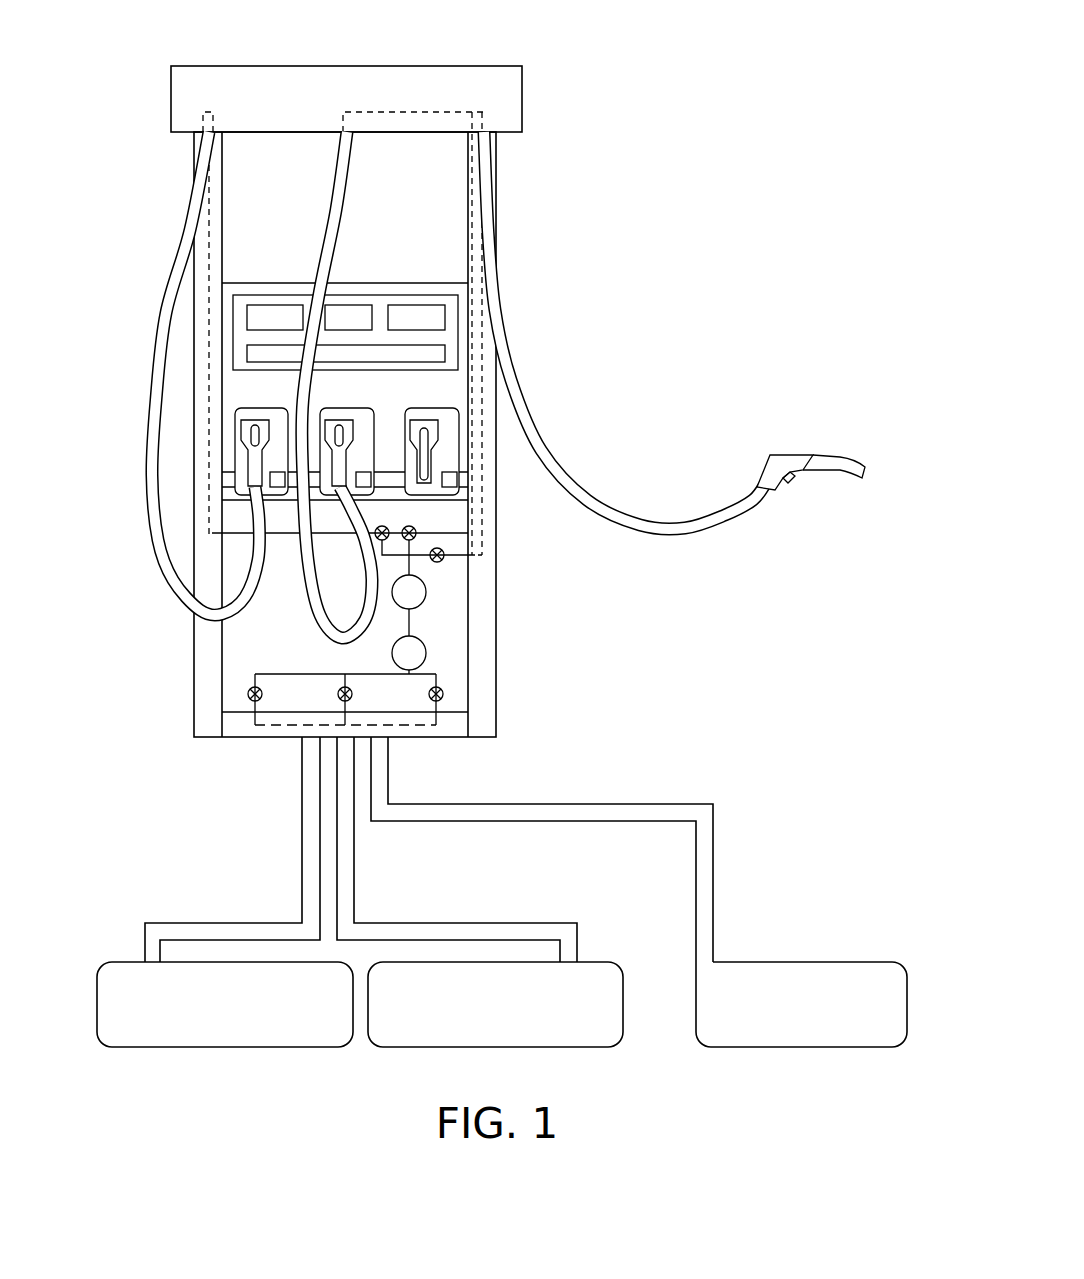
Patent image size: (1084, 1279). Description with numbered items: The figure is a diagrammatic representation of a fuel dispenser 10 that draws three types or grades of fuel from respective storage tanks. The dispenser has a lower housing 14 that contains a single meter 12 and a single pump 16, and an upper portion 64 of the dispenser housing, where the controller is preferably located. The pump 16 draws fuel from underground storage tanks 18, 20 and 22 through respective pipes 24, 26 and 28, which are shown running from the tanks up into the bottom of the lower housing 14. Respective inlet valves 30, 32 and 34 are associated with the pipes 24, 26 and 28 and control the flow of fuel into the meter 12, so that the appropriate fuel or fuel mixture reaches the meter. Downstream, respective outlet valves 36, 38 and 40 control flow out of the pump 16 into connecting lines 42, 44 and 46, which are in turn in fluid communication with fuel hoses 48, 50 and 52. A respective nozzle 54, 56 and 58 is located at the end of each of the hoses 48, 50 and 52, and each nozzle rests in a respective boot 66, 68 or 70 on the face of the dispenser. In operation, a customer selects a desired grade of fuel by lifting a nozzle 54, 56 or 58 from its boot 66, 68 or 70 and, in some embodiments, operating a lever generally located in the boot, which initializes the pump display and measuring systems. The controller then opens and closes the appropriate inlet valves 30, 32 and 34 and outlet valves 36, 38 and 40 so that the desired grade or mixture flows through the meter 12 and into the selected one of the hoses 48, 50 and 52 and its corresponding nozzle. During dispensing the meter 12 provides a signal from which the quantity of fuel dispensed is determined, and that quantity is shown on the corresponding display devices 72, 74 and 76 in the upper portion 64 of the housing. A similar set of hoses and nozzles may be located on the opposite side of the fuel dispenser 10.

The fuel dispenser 10 is at (626, 118).
The meter 12 is at (427, 653).
The lower housing 14 is at (210, 577).
The pump 16 is at (397, 605).
The underground storage tank 18 is at (120, 960).
The underground storage tank 20 is at (600, 960).
The underground storage tank 22 is at (845, 960).
The pipe 24 is at (170, 920).
The pipe 26 is at (545, 920).
The pipe 28 is at (716, 870).
The inlet valve 30 is at (263, 693).
The inlet valve 32 is at (353, 693).
The inlet valve 34 is at (445, 690).
The outlet valve 36 is at (376, 530).
The outlet valve 38 is at (415, 530).
The outlet valve 40 is at (440, 562).
The connecting line 42 is at (205, 316).
The connecting line 44 is at (385, 110).
The connecting line 46 is at (495, 320).
The fuel hose 48 is at (178, 243).
The fuel hose 50 is at (330, 207).
The fuel hose 52 is at (660, 522).
The nozzle 54 is at (253, 469).
The nozzle 56 is at (338, 420).
The nozzle 58 is at (790, 455).
The upper portion 64 is at (395, 294).
The boot 66 is at (252, 420).
The boot 68 is at (355, 420).
The boot 70 is at (428, 420).
The display device 72 is at (265, 312).
The display device 74 is at (355, 312).
The display device 76 is at (430, 312).